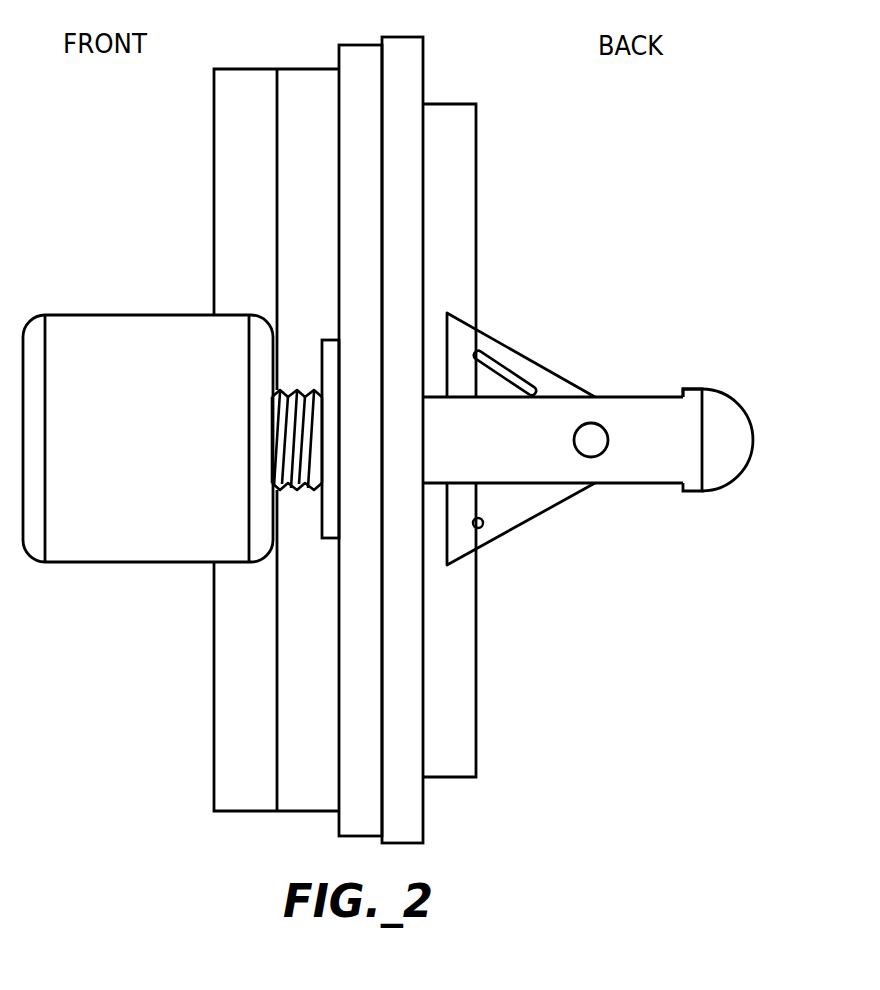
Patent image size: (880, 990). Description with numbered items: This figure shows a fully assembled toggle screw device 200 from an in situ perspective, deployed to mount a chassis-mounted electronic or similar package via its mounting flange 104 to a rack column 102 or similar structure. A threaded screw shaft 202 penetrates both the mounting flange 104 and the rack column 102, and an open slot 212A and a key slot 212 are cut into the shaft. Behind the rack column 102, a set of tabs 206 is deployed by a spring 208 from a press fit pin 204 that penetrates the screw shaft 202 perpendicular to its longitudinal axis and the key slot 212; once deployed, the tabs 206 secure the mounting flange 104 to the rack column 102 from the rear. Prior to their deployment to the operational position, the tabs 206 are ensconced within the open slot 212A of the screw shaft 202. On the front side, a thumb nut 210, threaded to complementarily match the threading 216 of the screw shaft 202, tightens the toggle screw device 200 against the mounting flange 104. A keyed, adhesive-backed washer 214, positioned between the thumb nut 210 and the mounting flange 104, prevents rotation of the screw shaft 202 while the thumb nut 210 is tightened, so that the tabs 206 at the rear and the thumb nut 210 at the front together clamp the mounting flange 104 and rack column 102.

The rack column 102 is at (408, 40).
The mounting flange 104 is at (359, 50).
The toggle screw device 200 is at (833, 444).
The threaded screw shaft 202 is at (500, 442).
The press fit pin 204 is at (592, 443).
The tabs 206 is at (503, 355).
The spring 208 is at (528, 388).
The thumb nut 210 is at (137, 553).
The key slot 212 is at (668, 488).
The open slot 212A is at (673, 390).
The keyed, adhesive-backed washer 214 is at (333, 540).
The threading 216 is at (307, 395).